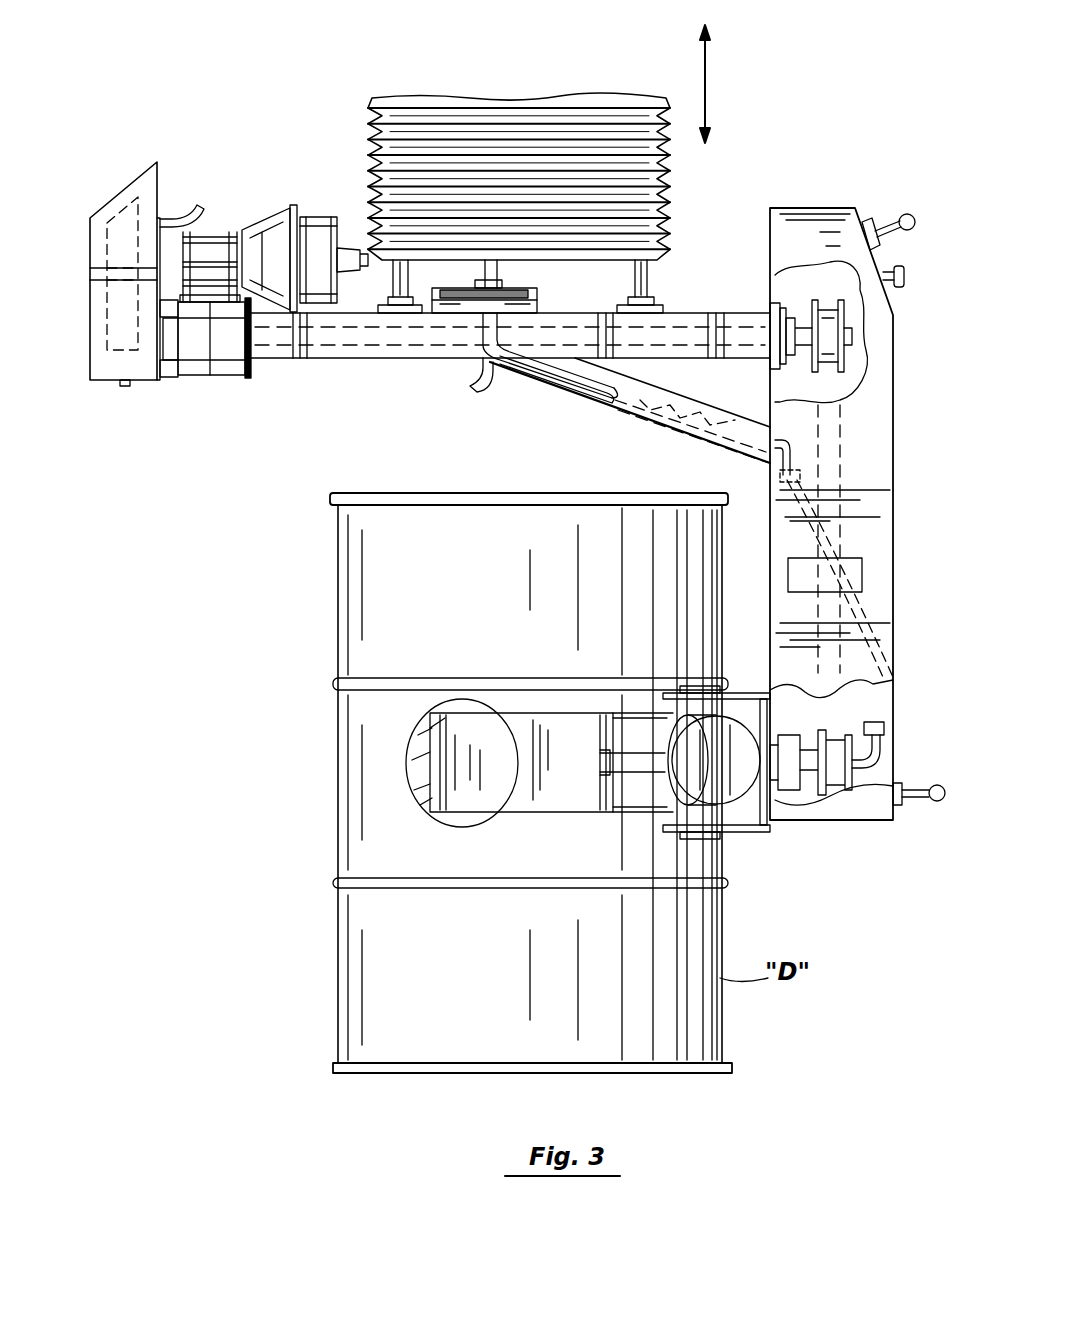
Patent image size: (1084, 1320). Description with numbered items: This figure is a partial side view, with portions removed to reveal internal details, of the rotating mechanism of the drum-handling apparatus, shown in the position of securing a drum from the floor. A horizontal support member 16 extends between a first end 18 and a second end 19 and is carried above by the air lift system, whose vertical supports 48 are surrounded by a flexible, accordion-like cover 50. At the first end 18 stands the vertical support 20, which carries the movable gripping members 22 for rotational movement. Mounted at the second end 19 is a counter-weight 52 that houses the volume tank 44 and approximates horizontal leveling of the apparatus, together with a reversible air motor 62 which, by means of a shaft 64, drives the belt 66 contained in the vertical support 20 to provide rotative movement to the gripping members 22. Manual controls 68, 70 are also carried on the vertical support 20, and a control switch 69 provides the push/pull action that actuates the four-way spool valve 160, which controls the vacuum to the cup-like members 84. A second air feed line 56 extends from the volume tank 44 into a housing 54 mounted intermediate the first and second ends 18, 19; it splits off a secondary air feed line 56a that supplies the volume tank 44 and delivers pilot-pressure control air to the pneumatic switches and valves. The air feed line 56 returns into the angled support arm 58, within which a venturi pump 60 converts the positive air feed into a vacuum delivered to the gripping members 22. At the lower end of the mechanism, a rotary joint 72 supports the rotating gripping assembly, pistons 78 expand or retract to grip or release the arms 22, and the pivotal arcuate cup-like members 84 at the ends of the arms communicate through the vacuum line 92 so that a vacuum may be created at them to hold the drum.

The horizontal support member 16 is at (322, 358).
The first end 18 is at (760, 300).
The second end 19 is at (245, 362).
The vertical support 20 is at (855, 457).
The movable gripping members 22 is at (530, 702).
The volume tank 44 is at (123, 210).
The vertical supports 48 is at (370, 262).
The flexible accordion-like cover 50 is at (430, 100).
The counter-weight 52 is at (88, 380).
The housing 54 is at (560, 296).
The second air feed line 56 is at (492, 283).
The secondary air feed line 56a is at (180, 200).
The angled support arm 58 is at (570, 392).
The venturi pump 60 is at (675, 430).
The reversible air motor 62 is at (265, 225).
The shaft 64 is at (402, 345).
The belt 66 is at (830, 355).
The manual control 68 is at (896, 262).
The control switch 69 is at (912, 276).
The manual control 70 is at (937, 802).
The rotary joint 72 is at (800, 790).
The pistons 78 is at (740, 790).
The cup-like members 84 is at (418, 745).
The vacuum line 92 is at (880, 755).
The four-way spool valve 160 is at (862, 578).